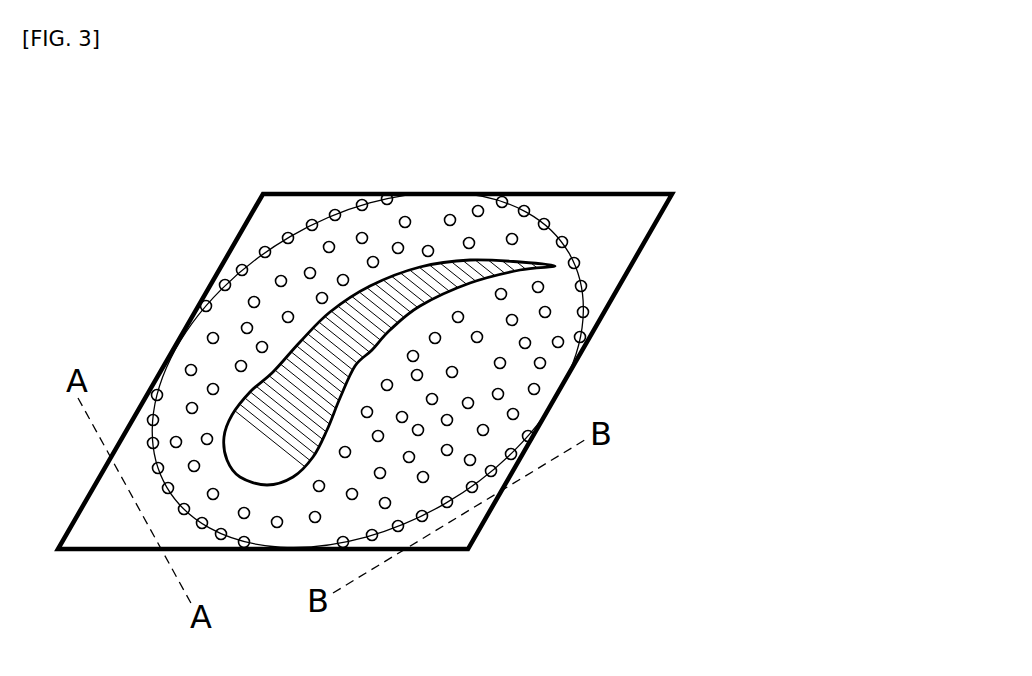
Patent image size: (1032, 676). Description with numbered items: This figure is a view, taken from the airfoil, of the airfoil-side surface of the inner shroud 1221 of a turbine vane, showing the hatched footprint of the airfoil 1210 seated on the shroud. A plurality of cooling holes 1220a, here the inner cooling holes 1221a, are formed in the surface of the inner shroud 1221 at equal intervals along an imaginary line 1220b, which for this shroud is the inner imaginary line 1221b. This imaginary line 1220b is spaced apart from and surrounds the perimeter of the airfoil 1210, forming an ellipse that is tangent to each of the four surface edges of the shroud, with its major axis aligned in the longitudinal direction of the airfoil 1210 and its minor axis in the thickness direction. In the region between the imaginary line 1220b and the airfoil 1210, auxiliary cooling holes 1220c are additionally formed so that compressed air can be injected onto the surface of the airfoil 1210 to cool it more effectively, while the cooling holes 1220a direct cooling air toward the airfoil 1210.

The inner shroud 1221 is at (272, 213).
The inner cooling holes 1221a is at (330, 213).
The cooling holes 1220a is at (297, 316).
The inner imaginary line 1221b is at (575, 260).
The imaginary line 1220b is at (632, 372).
The auxiliary cooling holes 1220c is at (525, 343).
The airfoil 1210 is at (273, 365).